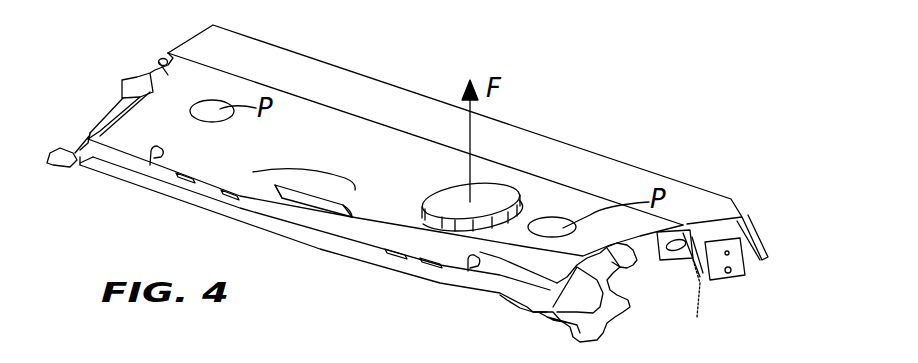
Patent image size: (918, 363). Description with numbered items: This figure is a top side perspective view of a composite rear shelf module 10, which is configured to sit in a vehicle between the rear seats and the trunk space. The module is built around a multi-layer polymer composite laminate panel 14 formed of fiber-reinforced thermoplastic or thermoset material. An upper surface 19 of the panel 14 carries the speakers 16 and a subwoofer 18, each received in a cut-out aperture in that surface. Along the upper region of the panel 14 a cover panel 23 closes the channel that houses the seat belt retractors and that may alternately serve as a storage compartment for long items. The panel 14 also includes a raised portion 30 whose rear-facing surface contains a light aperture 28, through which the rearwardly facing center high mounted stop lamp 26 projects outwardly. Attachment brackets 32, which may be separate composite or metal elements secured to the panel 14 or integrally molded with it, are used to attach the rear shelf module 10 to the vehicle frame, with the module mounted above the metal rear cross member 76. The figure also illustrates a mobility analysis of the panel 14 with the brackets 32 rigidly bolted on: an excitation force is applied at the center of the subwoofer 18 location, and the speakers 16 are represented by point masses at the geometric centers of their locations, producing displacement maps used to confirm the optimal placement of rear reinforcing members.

The rear shelf module 10 is at (116, 198).
The panel 14 is at (257, 156).
The speakers 16 is at (214, 107).
The subwoofer 18 is at (482, 193).
The upper surface 19 is at (160, 60).
The cover panel 23 is at (389, 113).
The center high mounted stop lamp (CHMSL) 26 is at (341, 208).
The light aperture 28 is at (290, 190).
The raised portion 30 is at (345, 193).
The attachment brackets 32 is at (618, 312).
The rear cross member 76 is at (454, 277).